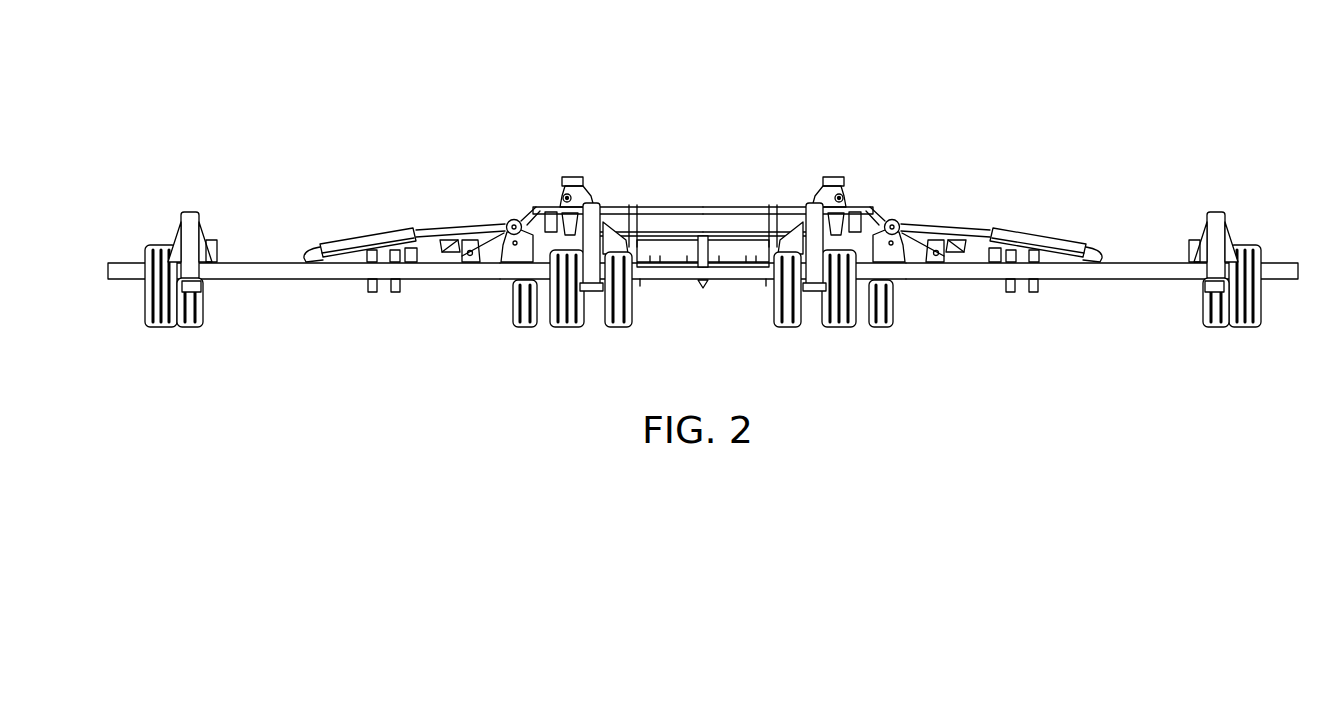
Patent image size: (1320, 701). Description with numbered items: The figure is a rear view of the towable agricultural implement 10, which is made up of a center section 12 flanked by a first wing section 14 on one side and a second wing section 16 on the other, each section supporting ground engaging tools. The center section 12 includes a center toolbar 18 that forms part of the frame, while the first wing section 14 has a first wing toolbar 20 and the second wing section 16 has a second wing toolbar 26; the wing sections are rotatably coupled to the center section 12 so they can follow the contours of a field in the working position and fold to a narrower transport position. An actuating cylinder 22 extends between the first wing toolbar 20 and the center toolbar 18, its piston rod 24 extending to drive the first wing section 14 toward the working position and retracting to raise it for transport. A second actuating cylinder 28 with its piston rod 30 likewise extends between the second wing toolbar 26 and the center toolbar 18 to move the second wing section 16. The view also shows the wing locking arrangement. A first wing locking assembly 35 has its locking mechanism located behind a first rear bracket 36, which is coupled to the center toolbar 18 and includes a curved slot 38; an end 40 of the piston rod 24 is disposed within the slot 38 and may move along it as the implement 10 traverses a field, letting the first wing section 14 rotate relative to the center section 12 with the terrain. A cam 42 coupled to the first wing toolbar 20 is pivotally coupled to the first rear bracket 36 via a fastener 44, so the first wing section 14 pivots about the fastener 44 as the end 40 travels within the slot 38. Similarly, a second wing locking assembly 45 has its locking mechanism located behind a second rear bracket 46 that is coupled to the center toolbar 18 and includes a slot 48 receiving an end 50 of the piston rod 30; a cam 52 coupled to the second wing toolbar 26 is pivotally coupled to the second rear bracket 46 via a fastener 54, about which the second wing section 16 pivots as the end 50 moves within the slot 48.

The towable agricultural implement 10 is at (556, 59).
The center section 12 is at (717, 181).
The first wing section 14 is at (1079, 343).
The second wing section 16 is at (327, 343).
The center toolbar 18 is at (500, 283).
The first wing toolbar 20 is at (1122, 272).
The actuating cylinder 22 is at (1040, 236).
The piston rod 24 is at (943, 223).
The second wing toolbar 26 is at (265, 279).
The second actuating cylinder 28 is at (369, 240).
The piston rod 30 is at (462, 223).
The first wing locking assembly 35 is at (969, 113).
The first rear bracket 36 is at (903, 223).
The slot 38 is at (869, 219).
The end 40 is at (890, 218).
The cam 42 is at (934, 262).
The fastener 44 is at (937, 262).
The second wing locking assembly 45 is at (440, 115).
The second rear bracket 46 is at (505, 220).
The slot 48 is at (533, 212).
The end 50 is at (516, 220).
The cam 52 is at (465, 266).
The fastener 54 is at (468, 262).